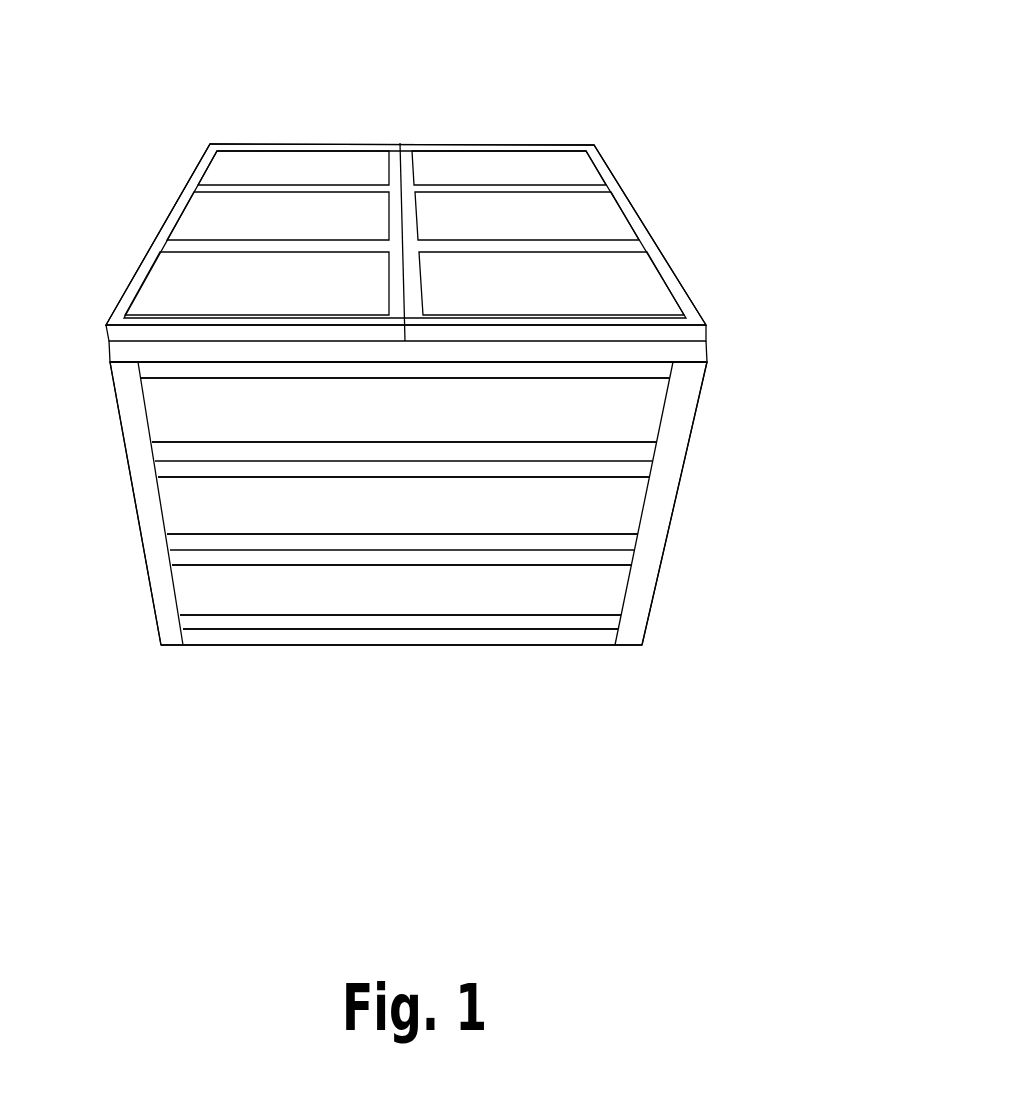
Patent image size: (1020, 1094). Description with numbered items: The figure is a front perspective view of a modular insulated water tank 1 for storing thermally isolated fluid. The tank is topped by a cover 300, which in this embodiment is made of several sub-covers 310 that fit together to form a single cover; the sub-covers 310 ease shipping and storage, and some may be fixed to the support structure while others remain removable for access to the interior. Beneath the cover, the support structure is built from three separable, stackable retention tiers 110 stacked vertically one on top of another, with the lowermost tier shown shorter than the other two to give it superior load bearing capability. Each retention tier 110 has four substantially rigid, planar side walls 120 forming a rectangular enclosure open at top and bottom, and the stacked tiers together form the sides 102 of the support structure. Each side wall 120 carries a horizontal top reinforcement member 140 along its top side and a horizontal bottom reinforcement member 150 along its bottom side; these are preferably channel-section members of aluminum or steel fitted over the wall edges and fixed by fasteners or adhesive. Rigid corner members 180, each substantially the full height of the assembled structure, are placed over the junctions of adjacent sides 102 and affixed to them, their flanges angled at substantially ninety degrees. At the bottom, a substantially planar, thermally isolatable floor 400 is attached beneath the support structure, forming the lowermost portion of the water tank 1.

The modular insulated water tank 1 is at (172, 156).
The cover 300 is at (648, 220).
The sub-cover 310 is at (260, 168).
The retention tier 110 is at (157, 628).
The top reinforcement member 140 is at (632, 368).
The bottom reinforcement member 150 is at (637, 452).
The corner member 180 is at (675, 415).
The side 102 is at (675, 502).
The side wall 120 is at (257, 590).
The floor 400 is at (553, 638).